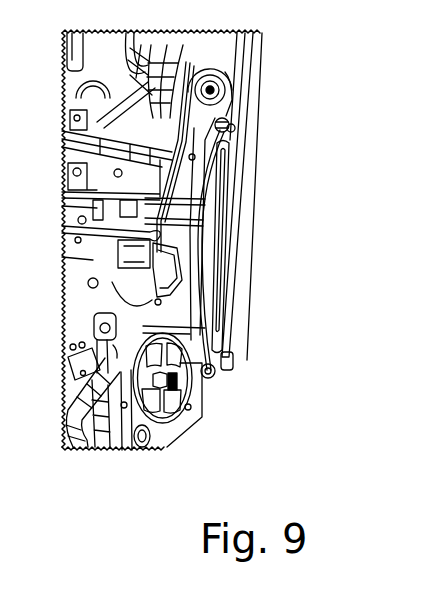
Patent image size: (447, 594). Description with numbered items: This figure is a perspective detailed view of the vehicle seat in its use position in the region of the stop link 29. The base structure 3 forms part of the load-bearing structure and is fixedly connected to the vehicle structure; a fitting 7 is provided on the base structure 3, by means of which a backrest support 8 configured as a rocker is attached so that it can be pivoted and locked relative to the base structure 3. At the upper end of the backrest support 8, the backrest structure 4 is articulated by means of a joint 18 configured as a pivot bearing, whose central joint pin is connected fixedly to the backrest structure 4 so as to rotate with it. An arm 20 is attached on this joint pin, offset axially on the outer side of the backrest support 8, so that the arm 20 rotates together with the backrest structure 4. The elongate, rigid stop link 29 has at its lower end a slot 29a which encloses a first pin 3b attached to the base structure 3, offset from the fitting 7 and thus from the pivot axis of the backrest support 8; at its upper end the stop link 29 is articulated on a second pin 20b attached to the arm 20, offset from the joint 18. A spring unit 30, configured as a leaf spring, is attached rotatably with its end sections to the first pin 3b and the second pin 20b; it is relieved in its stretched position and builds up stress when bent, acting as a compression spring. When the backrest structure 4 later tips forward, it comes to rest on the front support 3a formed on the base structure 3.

The base structure 3 is at (180, 427).
The front support 3a is at (63, 402).
The first pin 3b is at (218, 369).
The backrest structure 4 is at (245, 63).
The fitting 7 is at (118, 413).
The backrest support 8 is at (192, 181).
The joint 18 is at (213, 91).
The arm 20 is at (226, 121).
The second pin 20b is at (233, 130).
The stop link 29 is at (219, 297).
The slot 29a is at (211, 376).
The spring unit 30 is at (206, 197).